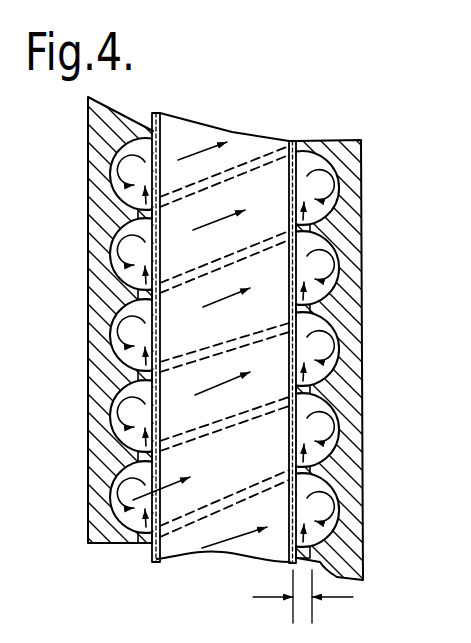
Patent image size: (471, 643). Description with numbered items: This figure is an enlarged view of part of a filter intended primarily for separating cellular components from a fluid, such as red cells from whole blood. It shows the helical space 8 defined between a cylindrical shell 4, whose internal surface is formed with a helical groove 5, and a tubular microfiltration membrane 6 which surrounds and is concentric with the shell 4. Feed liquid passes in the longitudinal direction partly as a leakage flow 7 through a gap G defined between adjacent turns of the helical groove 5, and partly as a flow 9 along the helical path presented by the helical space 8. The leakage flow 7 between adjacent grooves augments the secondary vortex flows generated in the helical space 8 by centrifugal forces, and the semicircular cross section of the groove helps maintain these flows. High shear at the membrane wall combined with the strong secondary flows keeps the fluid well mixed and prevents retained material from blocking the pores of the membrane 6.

The cylindrical shell 4 is at (97, 187).
The helical groove 5 is at (138, 290).
The tubular microfiltration membrane 6 is at (292, 144).
The leakage flow 7 is at (158, 305).
The helical space 8 is at (132, 470).
The flow 9 is at (197, 147).
The gap G is at (309, 599).